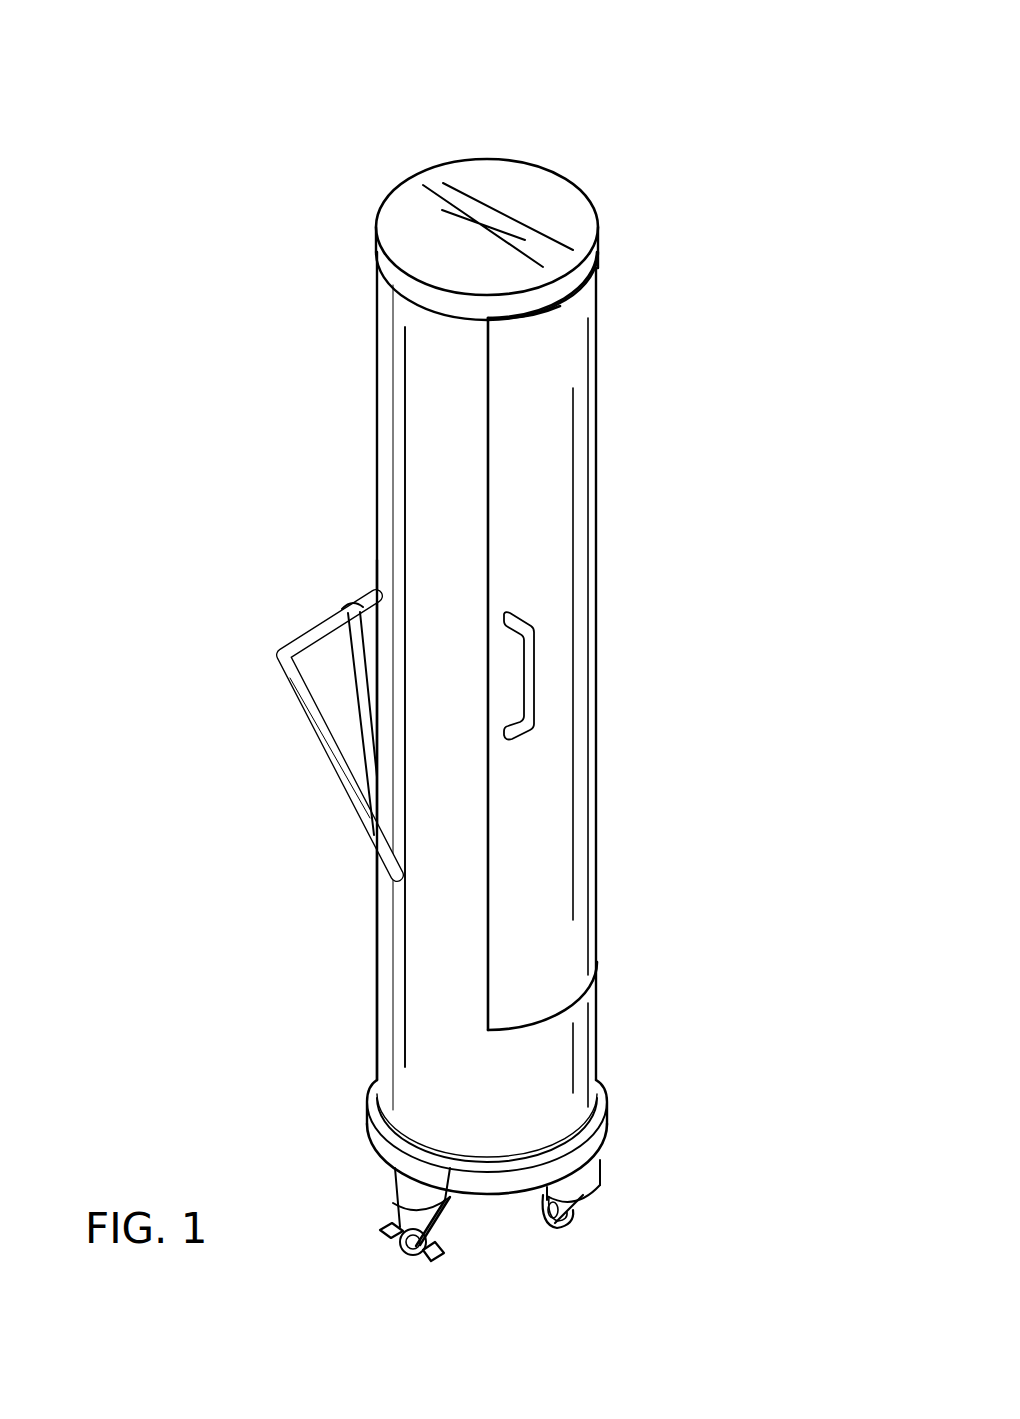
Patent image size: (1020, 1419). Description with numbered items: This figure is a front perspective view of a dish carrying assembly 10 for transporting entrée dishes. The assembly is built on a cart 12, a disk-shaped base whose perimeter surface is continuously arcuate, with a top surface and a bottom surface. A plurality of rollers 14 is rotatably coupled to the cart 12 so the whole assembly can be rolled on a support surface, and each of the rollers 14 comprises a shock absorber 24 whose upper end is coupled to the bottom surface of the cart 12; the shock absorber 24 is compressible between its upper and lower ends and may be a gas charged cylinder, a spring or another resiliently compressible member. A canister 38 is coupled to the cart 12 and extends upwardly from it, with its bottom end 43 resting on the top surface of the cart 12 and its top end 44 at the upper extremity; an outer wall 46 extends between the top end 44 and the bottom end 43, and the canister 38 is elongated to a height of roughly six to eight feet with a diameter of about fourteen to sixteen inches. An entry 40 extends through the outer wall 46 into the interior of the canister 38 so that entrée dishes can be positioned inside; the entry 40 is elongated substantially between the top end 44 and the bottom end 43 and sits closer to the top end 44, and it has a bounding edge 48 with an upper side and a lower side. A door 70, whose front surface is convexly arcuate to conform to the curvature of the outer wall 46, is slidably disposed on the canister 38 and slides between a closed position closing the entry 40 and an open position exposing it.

The dish carrying assembly 10 is at (634, 112).
The cart 12 is at (600, 1110).
The rollers 14 is at (443, 1270).
The shock absorber 24 is at (407, 1192).
The canister 38 is at (400, 357).
The entry 40 is at (490, 503).
The bottom end 43 is at (603, 1186).
The top end 44 is at (473, 202).
The outer wall 46 is at (405, 490).
The bounding edge 48 is at (557, 305).
The door 70 is at (577, 633).